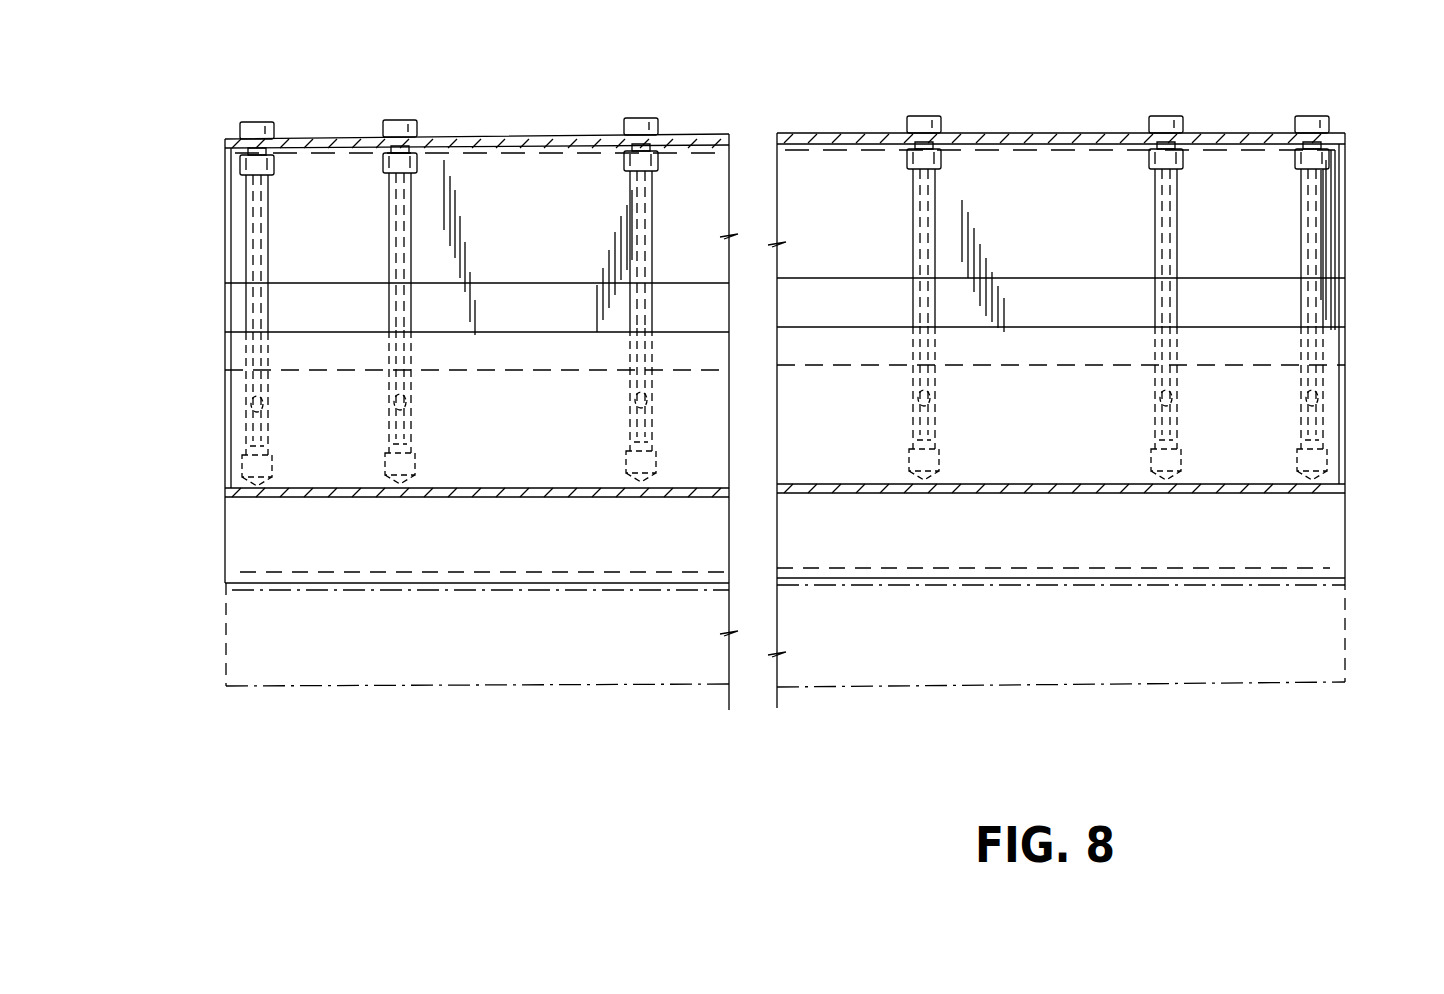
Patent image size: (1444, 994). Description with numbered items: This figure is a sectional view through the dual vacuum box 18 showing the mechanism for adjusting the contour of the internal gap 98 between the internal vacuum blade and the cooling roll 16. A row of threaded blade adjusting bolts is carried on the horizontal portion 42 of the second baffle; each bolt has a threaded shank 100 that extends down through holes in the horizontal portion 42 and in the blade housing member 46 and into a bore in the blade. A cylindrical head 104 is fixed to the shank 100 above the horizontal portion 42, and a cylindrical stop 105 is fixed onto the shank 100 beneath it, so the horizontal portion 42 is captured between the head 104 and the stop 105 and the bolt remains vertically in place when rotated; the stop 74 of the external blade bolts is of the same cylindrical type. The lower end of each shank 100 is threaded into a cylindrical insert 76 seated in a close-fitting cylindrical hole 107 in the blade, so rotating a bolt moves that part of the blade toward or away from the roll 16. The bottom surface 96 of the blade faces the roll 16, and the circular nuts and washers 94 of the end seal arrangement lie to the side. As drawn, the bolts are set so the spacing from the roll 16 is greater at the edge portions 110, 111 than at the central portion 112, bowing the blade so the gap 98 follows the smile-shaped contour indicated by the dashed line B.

The cooling roll 16 is at (1312, 648).
The dual vacuum box 18 is at (821, 104).
The horizontal portion 42 is at (1058, 133).
The blade housing member 46 is at (484, 270).
The cylindrical stop 74 is at (418, 172).
The cylindrical insert 76 is at (246, 405).
The circular nuts and washers 94 is at (300, 577).
The bottom surface 96 is at (995, 580).
The internal gap 98 is at (1330, 583).
The threaded shank 100 is at (247, 143).
The cylindrical head 104 is at (270, 127).
The cylindrical stop 105 is at (248, 165).
The cylindrical hole 107 is at (265, 401).
The edge portion 110 is at (255, 527).
The edge portion 111 is at (1305, 512).
The central portion 112 is at (695, 568).
The dashed line B is at (262, 572).